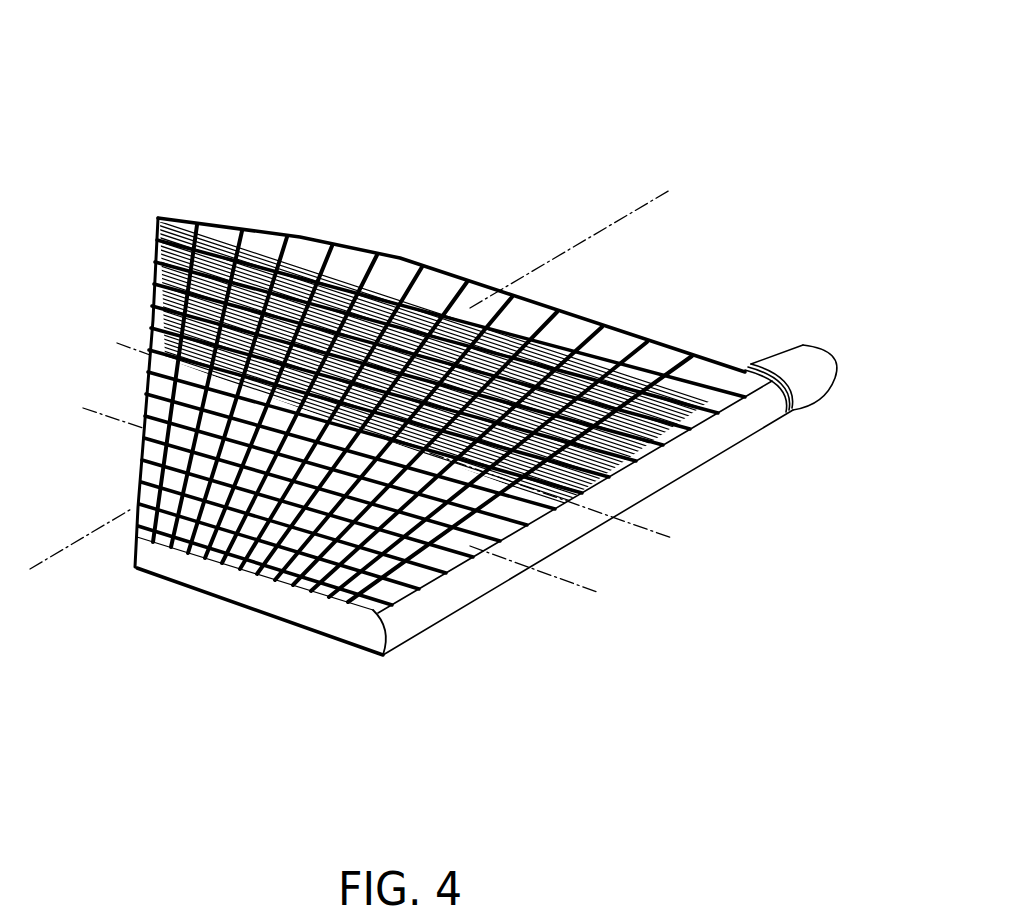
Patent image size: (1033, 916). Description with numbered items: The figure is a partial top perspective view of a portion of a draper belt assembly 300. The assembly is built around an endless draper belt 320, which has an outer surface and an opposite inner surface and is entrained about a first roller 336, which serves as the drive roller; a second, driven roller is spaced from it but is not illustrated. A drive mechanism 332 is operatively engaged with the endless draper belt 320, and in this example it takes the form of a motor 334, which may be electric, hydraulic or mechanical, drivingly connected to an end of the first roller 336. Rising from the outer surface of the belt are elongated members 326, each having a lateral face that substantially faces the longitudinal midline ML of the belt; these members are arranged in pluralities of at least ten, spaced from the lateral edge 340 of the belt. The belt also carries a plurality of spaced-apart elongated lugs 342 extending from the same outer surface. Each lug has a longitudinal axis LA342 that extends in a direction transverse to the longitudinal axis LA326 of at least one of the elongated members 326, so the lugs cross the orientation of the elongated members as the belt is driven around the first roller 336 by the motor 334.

The draper belt assembly 300 is at (519, 98).
The endless draper belt 320 is at (410, 246).
The elongated members 326 is at (532, 330).
The drive mechanism 332 is at (878, 262).
The motor 334 is at (835, 364).
The first roller 336 is at (363, 648).
The lateral edge 340 is at (681, 347).
The elongated lug 342 is at (272, 236).
The longitudinal midline ML is at (417, 454).
The longitudinal axis of elongated member LA326 is at (340, 500).
The longitudinal axis of elongated lug LA342 is at (350, 379).